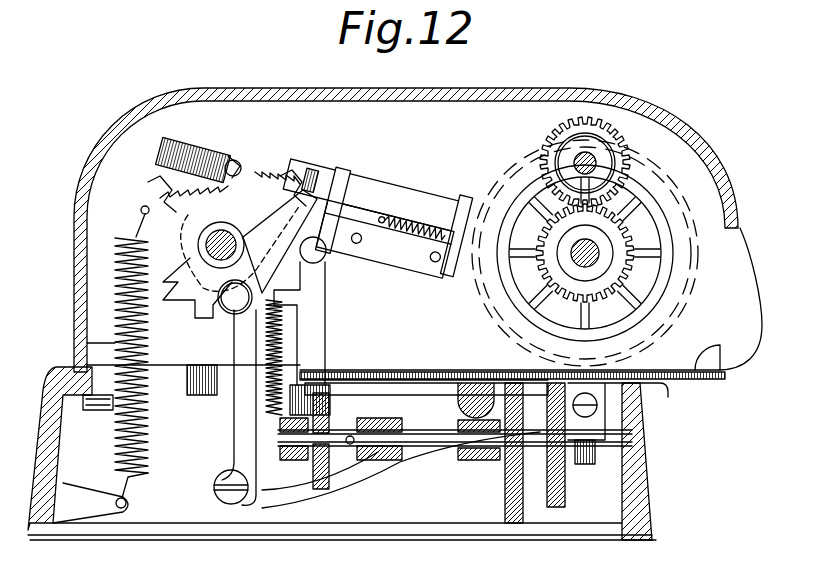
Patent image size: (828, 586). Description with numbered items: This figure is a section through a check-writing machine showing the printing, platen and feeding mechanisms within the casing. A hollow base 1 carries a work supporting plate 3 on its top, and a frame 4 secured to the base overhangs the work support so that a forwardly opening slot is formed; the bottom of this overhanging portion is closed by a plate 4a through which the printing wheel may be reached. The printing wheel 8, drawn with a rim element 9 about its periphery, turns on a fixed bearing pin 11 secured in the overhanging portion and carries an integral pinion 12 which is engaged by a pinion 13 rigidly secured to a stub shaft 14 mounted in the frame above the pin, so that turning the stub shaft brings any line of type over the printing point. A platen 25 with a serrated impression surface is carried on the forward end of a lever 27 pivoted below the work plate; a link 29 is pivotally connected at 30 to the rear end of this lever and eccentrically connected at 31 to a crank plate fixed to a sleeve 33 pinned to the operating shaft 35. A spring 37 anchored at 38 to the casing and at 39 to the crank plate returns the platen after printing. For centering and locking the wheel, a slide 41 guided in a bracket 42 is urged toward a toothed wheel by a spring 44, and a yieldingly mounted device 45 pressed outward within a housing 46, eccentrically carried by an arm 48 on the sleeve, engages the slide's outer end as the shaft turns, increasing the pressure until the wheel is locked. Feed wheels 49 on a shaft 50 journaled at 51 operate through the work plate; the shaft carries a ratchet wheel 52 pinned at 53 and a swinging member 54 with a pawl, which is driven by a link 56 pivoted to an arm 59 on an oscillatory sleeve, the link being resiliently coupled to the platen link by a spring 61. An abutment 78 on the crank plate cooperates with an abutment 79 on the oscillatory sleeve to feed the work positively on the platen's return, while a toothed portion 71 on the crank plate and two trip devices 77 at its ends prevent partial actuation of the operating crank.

The hollow base 1 is at (637, 500).
The work supporting plate 3 is at (445, 371).
The frame 4 is at (440, 99).
The plate 4a is at (496, 372).
The printing wheel 8 is at (675, 215).
The rim pins 9 is at (697, 250).
The fixed bearing pin 11 is at (592, 247).
The pinion 12 is at (610, 280).
The pinion 13 is at (622, 152).
The stub shaft 14 is at (575, 158).
The platen 25 is at (605, 392).
The lever 27 is at (350, 490).
The link 29 is at (238, 395).
The pivot 30 is at (222, 498).
The eccentric pivot 31 is at (234, 312).
The sleeve 33 is at (240, 238).
The operating shaft 35 is at (222, 230).
The spring 37 is at (123, 272).
The spring anchorage 38 is at (128, 500).
The spring anchorage 39 is at (140, 211).
The slide 41 is at (385, 198).
The bracket 42 is at (410, 260).
The spring 44 is at (432, 210).
The yieldingly mounted device 45 is at (242, 163).
The housing 46 is at (200, 152).
The arm 48 is at (229, 158).
The feed wheels 49 is at (520, 505).
The shaft 50 is at (440, 448).
The journal 51 is at (385, 458).
The ratchet wheel 52 is at (322, 428).
The pin 53 is at (352, 438).
The swinging member 54 is at (300, 460).
The link 56 is at (310, 290).
The arm 59 is at (306, 238).
The spring 61 is at (283, 322).
The toothed portion 71 is at (190, 192).
The trip devices 77 is at (158, 186).
The abutment 78 is at (178, 285).
The abutment 79 is at (195, 318).